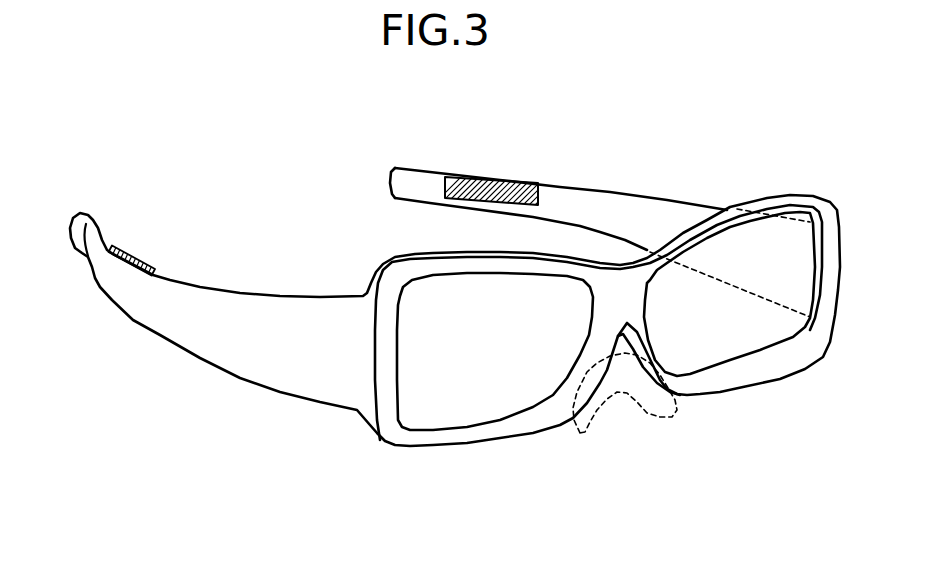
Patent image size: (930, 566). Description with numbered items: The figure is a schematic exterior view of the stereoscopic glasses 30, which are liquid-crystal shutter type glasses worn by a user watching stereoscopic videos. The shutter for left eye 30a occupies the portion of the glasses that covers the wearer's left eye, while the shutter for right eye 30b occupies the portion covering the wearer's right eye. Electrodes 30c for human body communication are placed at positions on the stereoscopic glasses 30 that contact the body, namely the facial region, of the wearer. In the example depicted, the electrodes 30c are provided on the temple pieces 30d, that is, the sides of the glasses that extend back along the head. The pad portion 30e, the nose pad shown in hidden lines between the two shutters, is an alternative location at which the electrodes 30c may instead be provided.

The stereoscopic glasses 30 is at (712, 136).
The shutter for left eye 30a is at (743, 340).
The shutter for right eye 30b is at (490, 402).
The electrodes 30c is at (128, 258).
The temple pieces 30d is at (571, 164).
The pad portion 30e is at (638, 400).